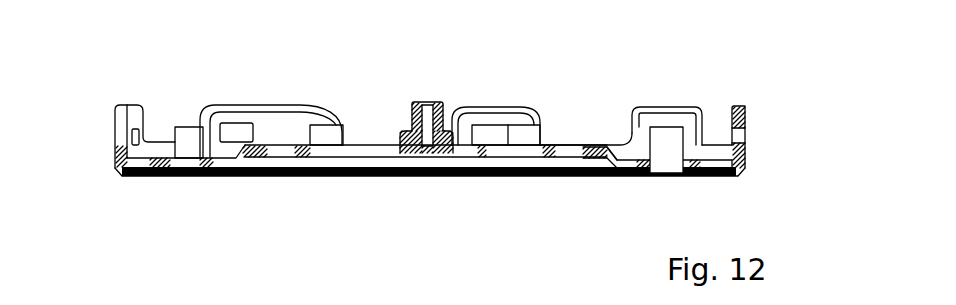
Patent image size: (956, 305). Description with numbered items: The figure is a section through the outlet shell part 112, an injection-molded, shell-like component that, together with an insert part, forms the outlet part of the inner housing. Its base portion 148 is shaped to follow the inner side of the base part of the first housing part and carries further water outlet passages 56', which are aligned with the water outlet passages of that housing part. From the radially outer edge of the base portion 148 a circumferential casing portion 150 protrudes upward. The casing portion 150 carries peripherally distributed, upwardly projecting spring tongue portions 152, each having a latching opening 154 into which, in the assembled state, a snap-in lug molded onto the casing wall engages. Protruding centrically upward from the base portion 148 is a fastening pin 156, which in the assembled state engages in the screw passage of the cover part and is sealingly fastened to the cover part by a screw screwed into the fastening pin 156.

The outlet shell part 112 is at (203, 173).
The base portion 148 is at (598, 147).
The circumferential casing portion 150 is at (745, 151).
The spring tongue portions 152 is at (745, 107).
The latching openings 154 is at (745, 132).
The fastening pin 156 is at (445, 107).
The further water outlet passages 56' is at (425, 198).